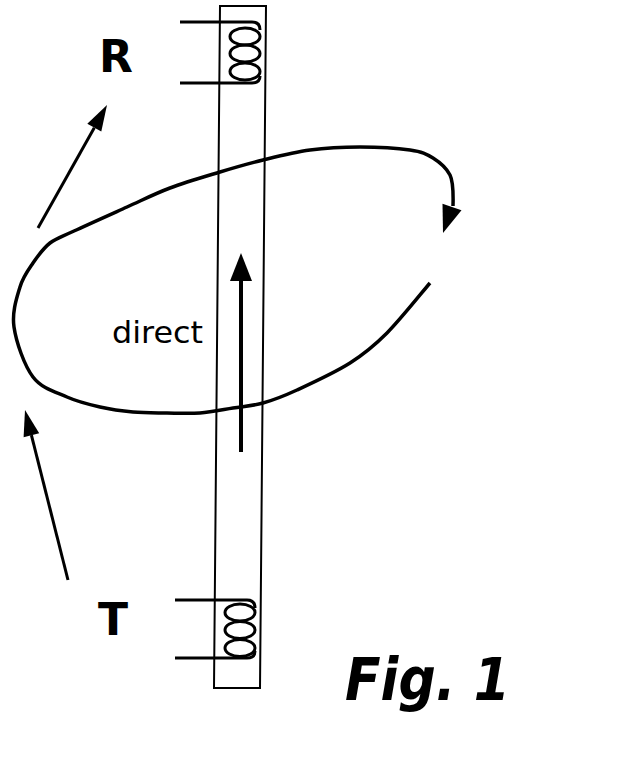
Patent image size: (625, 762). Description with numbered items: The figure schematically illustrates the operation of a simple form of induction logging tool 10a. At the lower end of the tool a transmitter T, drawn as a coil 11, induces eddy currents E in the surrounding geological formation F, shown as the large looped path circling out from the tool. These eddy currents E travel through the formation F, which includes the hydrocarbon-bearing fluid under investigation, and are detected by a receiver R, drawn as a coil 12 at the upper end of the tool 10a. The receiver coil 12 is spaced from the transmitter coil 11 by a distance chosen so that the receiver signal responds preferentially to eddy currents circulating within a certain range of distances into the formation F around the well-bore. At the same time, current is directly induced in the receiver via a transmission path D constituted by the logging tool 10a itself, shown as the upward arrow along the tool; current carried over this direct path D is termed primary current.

The induction tool 10a is at (243, 533).
The receiver coil 12 is at (260, 62).
The transmitter coil 11 is at (232, 678).
The eddy currents E is at (385, 333).
The direct transmission path D is at (243, 338).
The formation F is at (519, 533).